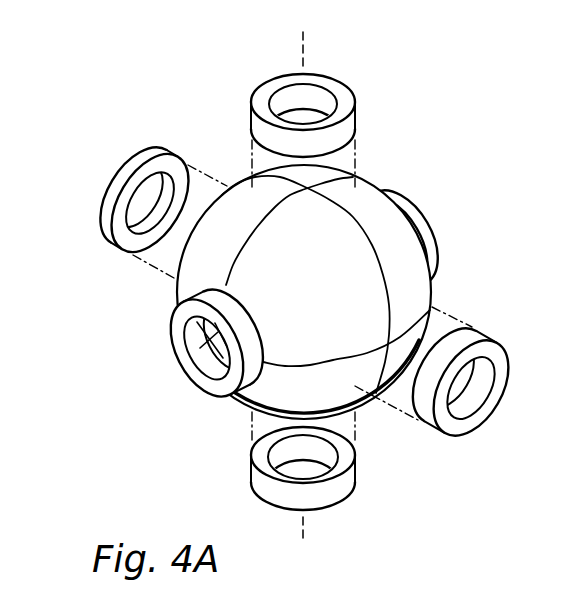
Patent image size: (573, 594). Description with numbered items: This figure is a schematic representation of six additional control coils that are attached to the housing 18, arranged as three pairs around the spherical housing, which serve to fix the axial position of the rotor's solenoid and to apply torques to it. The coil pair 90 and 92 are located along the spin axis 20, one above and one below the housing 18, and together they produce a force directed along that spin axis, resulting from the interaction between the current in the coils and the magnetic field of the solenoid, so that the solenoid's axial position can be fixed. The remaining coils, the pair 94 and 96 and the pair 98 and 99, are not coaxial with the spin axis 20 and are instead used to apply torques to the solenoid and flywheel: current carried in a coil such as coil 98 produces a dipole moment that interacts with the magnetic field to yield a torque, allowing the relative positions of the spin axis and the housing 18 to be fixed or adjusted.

The housing 18 is at (318, 272).
The spin axis 20 is at (303, 47).
The control coil 90 is at (355, 99).
The control coil 92 is at (357, 480).
The control coil 94 is at (510, 377).
The control coil 96 is at (97, 208).
The control coil 98 is at (168, 343).
The control coil 99 is at (433, 227).